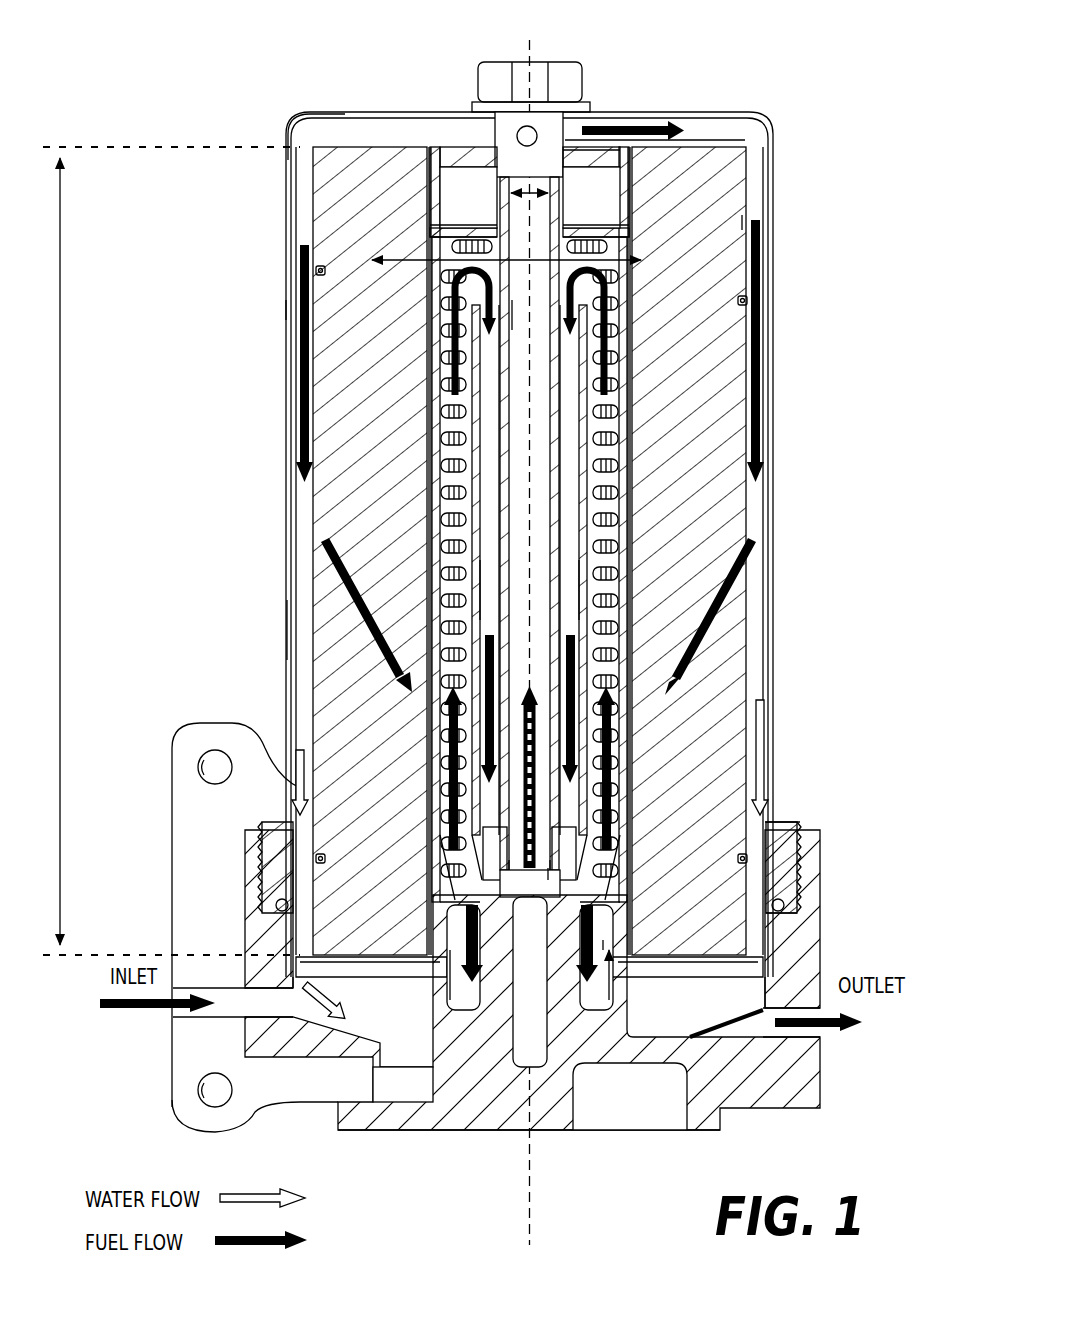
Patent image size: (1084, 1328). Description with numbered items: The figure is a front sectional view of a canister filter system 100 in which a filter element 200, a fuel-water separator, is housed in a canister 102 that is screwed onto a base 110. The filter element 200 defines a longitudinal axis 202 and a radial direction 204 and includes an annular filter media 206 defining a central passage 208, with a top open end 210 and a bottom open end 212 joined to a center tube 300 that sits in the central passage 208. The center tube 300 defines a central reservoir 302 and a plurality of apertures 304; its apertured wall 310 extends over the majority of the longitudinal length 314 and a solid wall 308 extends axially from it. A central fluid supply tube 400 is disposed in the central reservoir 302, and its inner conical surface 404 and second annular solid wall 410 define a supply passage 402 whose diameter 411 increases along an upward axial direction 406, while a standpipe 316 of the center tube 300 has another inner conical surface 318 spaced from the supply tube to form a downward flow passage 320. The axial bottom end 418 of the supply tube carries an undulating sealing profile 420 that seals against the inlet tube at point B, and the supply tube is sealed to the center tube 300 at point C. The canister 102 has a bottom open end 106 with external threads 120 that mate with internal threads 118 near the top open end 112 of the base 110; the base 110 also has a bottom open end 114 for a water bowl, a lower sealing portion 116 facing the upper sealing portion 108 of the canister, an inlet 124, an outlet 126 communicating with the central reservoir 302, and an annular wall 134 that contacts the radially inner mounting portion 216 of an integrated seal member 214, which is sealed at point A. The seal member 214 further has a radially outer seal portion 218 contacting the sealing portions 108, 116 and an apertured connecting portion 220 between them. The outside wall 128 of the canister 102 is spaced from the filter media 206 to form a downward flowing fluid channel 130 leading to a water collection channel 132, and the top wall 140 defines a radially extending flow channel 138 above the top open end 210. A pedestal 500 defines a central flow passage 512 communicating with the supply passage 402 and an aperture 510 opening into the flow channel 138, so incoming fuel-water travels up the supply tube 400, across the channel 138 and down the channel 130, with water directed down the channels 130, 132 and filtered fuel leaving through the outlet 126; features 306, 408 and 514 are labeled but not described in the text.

The canister filter system 100 is at (890, 88).
The canister 102 is at (480, 495).
The bottom open end 106 is at (303, 820).
The upper sealing portion 108 is at (284, 893).
The base 110 is at (505, 982).
The top open end 112 is at (604, 962).
The bottom open end 114 is at (462, 1135).
The lower sealing portion 116 is at (790, 920).
The internal threads 118 is at (808, 855).
The external threads 120 is at (772, 822).
The inlet 124 is at (232, 1003).
The outlet 126 is at (810, 1030).
The outside wall 128 is at (291, 628).
The downward flowing fluid channel 130 is at (305, 190).
The water collection channel 132 is at (322, 1005).
The annular wall 134 is at (602, 960).
The radially extending flow channel 138 is at (392, 118).
The top wall 140 is at (340, 112).
The filter element 200 is at (513, 599).
The longitudinal axis 202 is at (535, 1197).
The radial direction 204 is at (430, 265).
The annular filter media 206 is at (451, 569).
The central passage 208 is at (640, 292).
The top open end 210 is at (493, 172).
The bottom open end 212 is at (470, 1000).
The integrated seal member 214 is at (786, 900).
The radially inner mounting portion 216 is at (632, 982).
The radially outer seal portion 218 is at (297, 892).
The apertured connecting portion 220 is at (765, 935).
The center tube 300 is at (642, 238).
The central reservoir 302 is at (604, 368).
The plurality of apertures 304 is at (450, 512).
The media thickness 306 is at (372, 262).
The solid wall 308 is at (423, 228).
The apertured wall 310 is at (425, 465).
The longitudinal length 314 is at (65, 440).
The standpipe 316 is at (455, 868).
The inner conical surface 318 is at (470, 672).
The downward flow passage 320 is at (592, 492).
The central fluid supply tube 400 is at (513, 622).
The supply passage 402 is at (598, 405).
The inner conical surface 404 is at (480, 560).
The upward axial direction 406 is at (512, 300).
The flow channel 408 is at (640, 172).
The second annular solid wall 410 is at (672, 150).
The diameter 411 is at (505, 193).
The axial bottom end 418 is at (513, 880).
The undulating sealing profile 420 is at (498, 868).
The pedestal 500 is at (585, 93).
The aperture 510 is at (524, 128).
The central flow passage 512 is at (497, 172).
The cap nut 514 is at (439, 93).
The point A is at (603, 940).
The point B is at (548, 868).
The point C is at (740, 215).